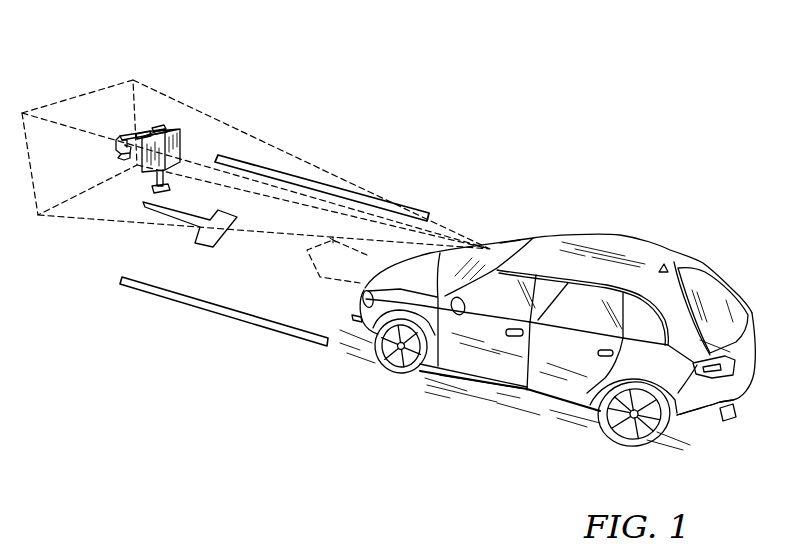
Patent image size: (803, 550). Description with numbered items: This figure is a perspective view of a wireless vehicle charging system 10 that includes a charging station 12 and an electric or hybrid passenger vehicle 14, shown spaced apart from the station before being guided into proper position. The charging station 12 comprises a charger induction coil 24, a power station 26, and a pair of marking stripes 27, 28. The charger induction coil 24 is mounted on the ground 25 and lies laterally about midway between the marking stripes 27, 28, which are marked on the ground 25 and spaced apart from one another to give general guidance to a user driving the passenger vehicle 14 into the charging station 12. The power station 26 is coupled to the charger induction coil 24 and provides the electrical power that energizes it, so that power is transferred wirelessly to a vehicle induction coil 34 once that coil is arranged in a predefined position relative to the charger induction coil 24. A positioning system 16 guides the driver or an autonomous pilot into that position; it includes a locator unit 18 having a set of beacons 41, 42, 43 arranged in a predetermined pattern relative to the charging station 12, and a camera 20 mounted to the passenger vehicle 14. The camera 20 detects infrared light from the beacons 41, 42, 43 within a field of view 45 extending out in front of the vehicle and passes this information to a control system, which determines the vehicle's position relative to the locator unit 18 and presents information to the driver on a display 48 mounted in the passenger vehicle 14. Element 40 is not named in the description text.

The wireless vehicle charging system 10 is at (655, 178).
The charging station 12 is at (125, 262).
The passenger vehicle 14 is at (684, 240).
The positioning system 16 is at (177, 120).
The locator unit 18 is at (132, 128).
The camera 20 is at (510, 250).
The charger induction coil 24 is at (200, 253).
The ground 25 is at (693, 442).
The power station 26 is at (185, 147).
The marking stripe 27 is at (323, 188).
The marking stripe 28 is at (310, 343).
The vehicle induction coil 34 is at (483, 380).
The clamp 40 is at (144, 125).
The beacon 41 is at (122, 155).
The beacon 42 is at (158, 122).
The beacon 43 is at (117, 133).
The field of view 45 is at (83, 95).
The display 48 is at (493, 293).